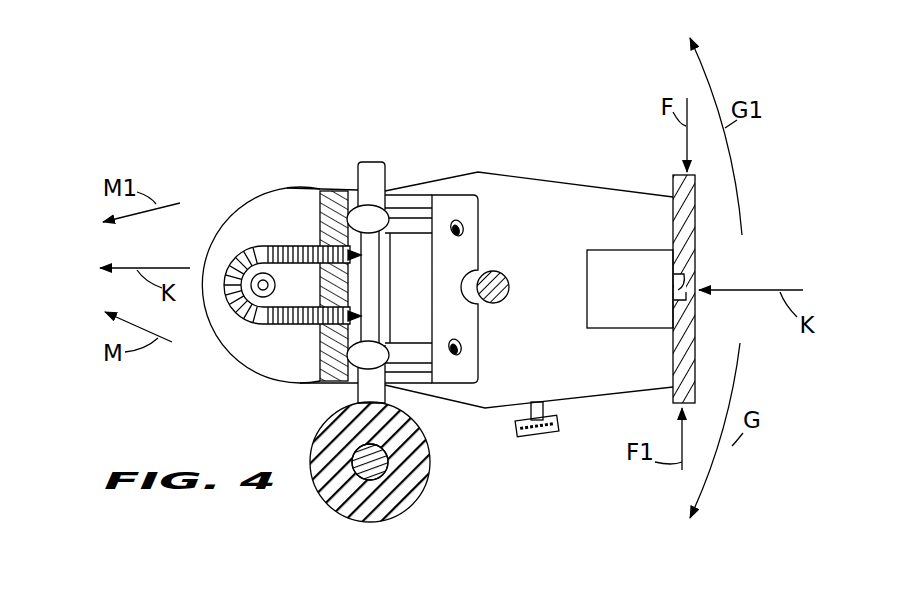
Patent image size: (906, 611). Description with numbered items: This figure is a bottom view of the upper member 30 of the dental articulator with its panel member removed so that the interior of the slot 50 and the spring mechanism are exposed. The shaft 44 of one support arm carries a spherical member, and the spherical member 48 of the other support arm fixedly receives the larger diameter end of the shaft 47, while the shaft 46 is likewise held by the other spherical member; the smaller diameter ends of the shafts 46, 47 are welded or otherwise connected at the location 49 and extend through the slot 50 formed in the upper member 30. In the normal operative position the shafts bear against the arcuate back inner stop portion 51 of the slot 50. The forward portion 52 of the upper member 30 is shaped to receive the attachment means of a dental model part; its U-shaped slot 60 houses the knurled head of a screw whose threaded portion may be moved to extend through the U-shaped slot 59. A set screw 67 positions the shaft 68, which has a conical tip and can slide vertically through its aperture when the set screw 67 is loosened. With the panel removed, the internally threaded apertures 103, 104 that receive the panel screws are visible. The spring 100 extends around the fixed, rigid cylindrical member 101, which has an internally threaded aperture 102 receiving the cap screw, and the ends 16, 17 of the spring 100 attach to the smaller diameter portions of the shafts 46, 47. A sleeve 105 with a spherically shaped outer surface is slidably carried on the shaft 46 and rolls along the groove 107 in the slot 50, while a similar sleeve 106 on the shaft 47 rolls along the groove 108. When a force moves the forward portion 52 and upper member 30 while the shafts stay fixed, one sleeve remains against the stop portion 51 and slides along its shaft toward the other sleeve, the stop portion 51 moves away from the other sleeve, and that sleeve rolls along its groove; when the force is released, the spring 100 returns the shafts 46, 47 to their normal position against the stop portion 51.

The upper member 30 is at (570, 168).
The shaft 46 is at (381, 162).
The shaft 47 is at (350, 393).
The shaft 44 is at (420, 490).
The spherical member 48 is at (365, 520).
The weld connection 49 is at (388, 276).
The slot 50 is at (432, 272).
The back inner stop portion 51 is at (285, 186).
The forward portion 52 is at (660, 184).
The U-shaped slot 59 is at (676, 280).
The U-shaped slot 60 is at (645, 250).
The set screw 67 is at (536, 436).
The shaft 68 is at (510, 282).
The spring 100 is at (240, 252).
The cylindrical member 101 is at (290, 247).
The internally threaded aperture 102 is at (240, 325).
The internally threaded aperture 103 is at (464, 230).
The internally threaded aperture 104 is at (462, 348).
The sleeve 105 is at (357, 206).
The sleeve 106 is at (400, 388).
The groove 107 is at (452, 208).
The groove 108 is at (430, 353).
The spring end 16 is at (386, 318).
The spring end 17 is at (386, 255).